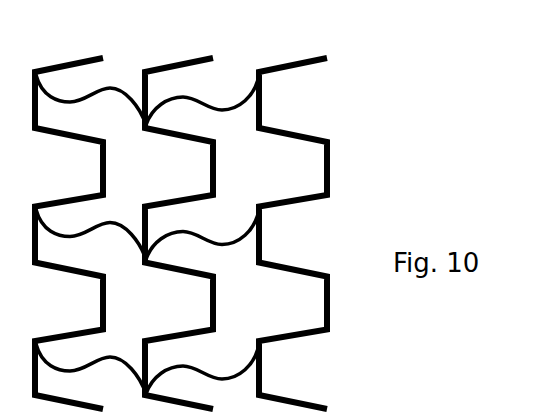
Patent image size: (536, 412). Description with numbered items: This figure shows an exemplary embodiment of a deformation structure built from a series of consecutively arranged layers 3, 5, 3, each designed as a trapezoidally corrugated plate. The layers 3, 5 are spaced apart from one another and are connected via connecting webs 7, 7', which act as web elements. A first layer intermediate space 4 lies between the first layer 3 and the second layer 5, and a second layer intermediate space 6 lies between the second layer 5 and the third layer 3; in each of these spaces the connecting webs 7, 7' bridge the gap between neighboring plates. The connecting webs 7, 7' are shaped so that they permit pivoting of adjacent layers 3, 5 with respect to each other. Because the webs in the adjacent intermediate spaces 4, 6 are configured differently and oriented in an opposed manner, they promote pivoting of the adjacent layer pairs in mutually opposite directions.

The layer 3 is at (74, 62).
The layer 5 is at (194, 58).
The connecting web 7 is at (91, 219).
The connecting web 7' is at (202, 227).
The first layer intermediate space 4 is at (113, 276).
The second layer intermediate space 6 is at (246, 299).